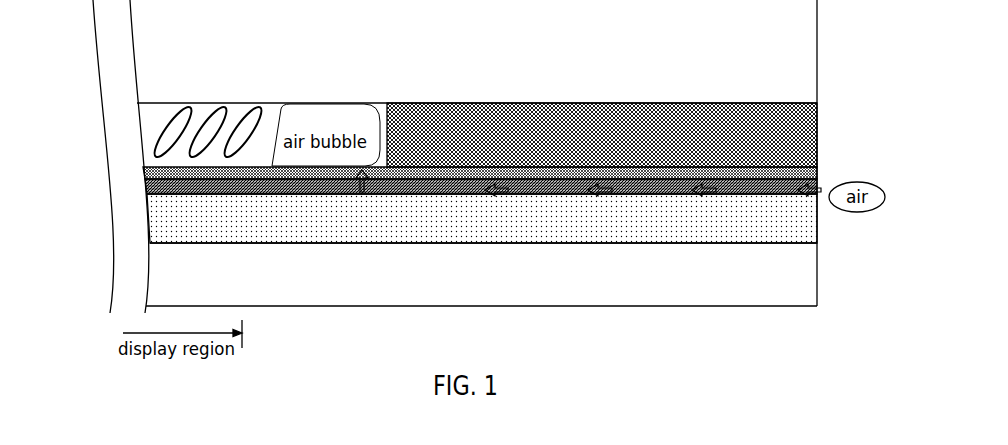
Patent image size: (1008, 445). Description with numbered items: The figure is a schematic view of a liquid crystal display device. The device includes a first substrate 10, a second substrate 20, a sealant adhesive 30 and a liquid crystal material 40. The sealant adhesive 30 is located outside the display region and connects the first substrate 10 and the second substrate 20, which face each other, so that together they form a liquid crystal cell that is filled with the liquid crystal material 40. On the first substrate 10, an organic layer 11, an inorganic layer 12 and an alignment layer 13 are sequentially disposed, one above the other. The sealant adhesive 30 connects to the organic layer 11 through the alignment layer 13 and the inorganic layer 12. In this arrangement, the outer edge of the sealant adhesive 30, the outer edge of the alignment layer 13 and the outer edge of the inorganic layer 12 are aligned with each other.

The first substrate 10 is at (817, 307).
The organic layer 11 is at (757, 222).
The inorganic layer 12 is at (150, 189).
The alignment layer 13 is at (148, 172).
The second substrate 20 is at (780, 47).
The sealant adhesive 30 is at (762, 136).
The liquid crystal material 40 is at (165, 131).